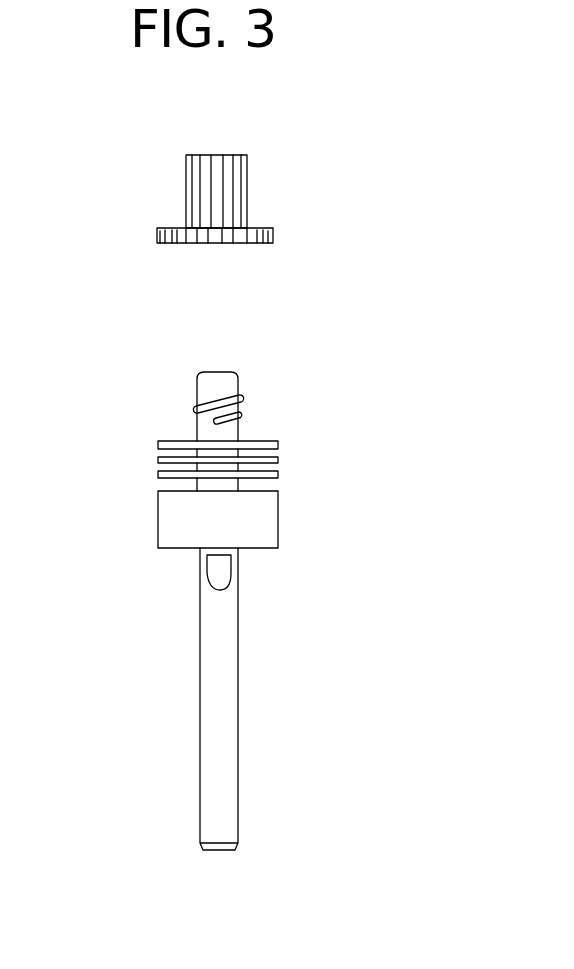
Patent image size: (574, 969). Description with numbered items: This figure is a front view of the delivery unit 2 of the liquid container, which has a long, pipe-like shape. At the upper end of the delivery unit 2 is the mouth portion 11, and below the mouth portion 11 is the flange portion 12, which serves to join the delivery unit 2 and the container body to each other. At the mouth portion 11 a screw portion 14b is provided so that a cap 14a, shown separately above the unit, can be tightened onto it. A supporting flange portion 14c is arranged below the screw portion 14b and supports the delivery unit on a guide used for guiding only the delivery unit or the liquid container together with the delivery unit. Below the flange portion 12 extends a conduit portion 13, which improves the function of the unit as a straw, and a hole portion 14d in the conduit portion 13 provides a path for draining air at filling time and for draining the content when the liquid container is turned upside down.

The cap 14a is at (174, 176).
The delivery unit 2 is at (139, 402).
The mouth portion 11 is at (230, 390).
The screw portion 14b is at (240, 402).
The supporting flange portion 14c is at (278, 445).
The flange portion 12 is at (268, 518).
The conduit portion 13 is at (228, 703).
The hole portion 14d is at (218, 575).